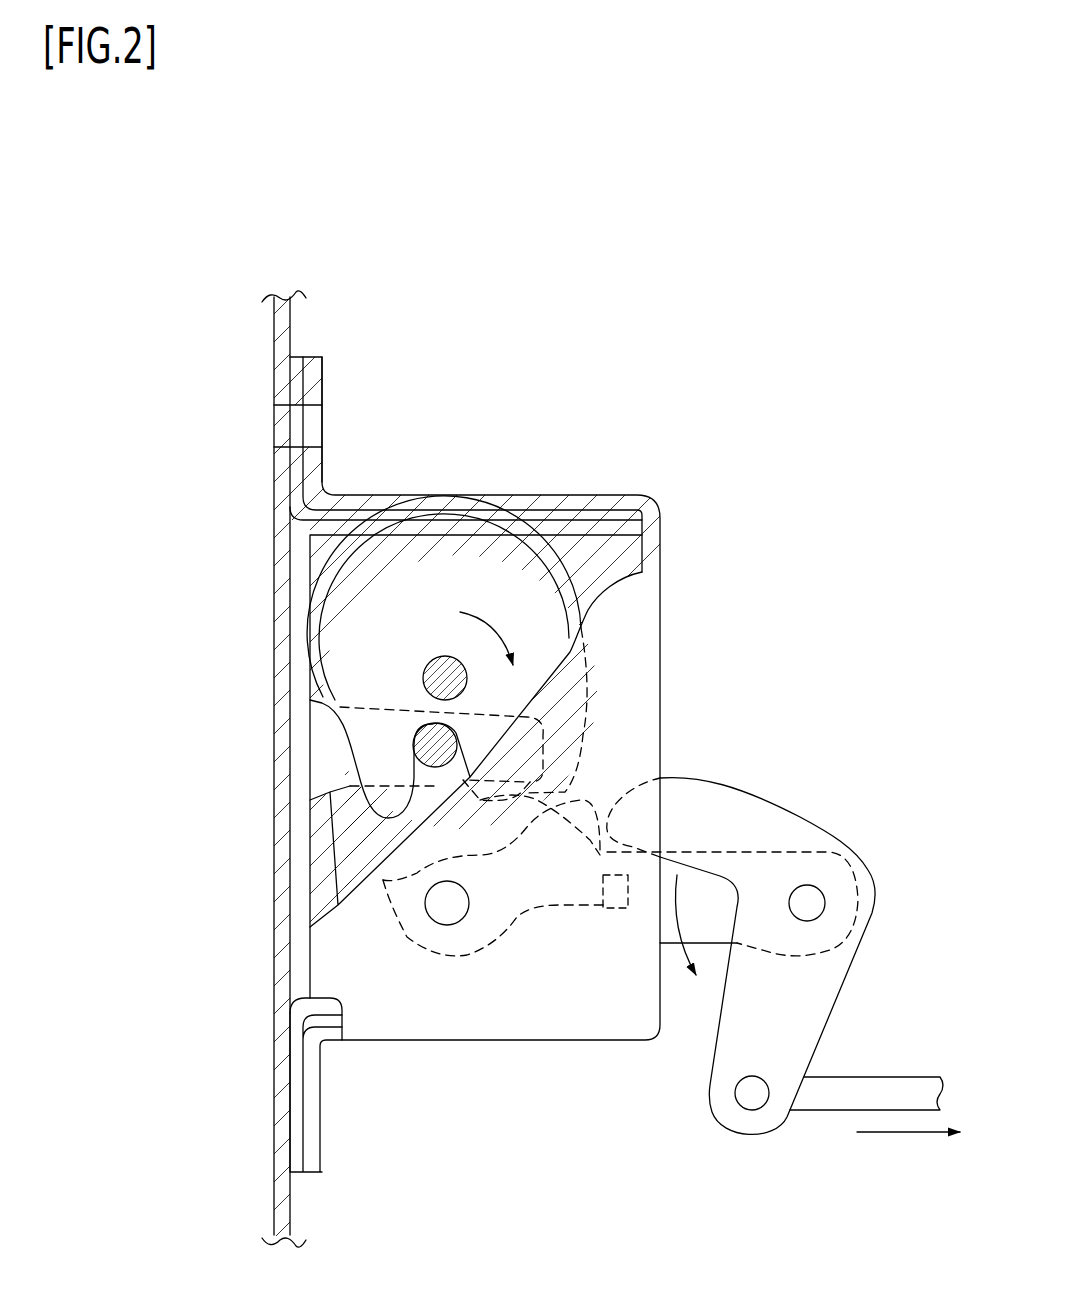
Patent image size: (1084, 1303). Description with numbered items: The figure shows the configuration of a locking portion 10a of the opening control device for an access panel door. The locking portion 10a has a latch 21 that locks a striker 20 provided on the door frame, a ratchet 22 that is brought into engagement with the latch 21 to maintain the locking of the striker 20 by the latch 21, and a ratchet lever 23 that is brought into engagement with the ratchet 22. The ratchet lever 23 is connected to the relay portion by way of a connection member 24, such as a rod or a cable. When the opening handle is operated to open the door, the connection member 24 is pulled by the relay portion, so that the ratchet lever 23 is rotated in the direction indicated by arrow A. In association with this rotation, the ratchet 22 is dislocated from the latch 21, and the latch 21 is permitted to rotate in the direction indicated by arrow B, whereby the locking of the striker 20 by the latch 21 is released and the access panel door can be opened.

The locking portion 10a is at (718, 506).
The striker 20 is at (430, 748).
The latch 21 is at (441, 592).
The ratchet 22 is at (528, 950).
The ratchet lever 23 is at (755, 808).
The connection member 24 is at (902, 1077).